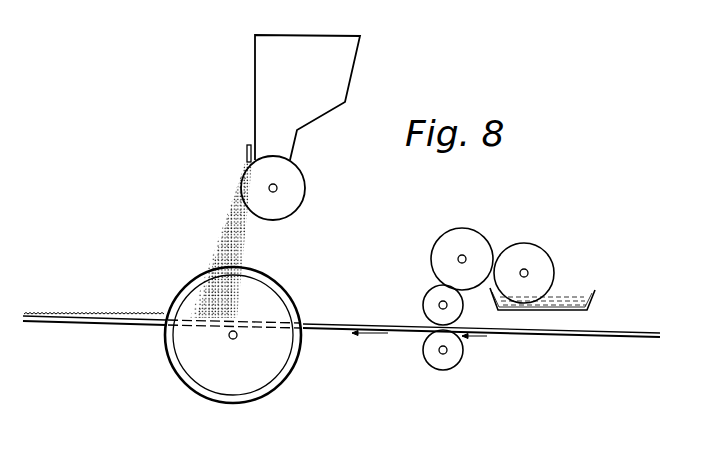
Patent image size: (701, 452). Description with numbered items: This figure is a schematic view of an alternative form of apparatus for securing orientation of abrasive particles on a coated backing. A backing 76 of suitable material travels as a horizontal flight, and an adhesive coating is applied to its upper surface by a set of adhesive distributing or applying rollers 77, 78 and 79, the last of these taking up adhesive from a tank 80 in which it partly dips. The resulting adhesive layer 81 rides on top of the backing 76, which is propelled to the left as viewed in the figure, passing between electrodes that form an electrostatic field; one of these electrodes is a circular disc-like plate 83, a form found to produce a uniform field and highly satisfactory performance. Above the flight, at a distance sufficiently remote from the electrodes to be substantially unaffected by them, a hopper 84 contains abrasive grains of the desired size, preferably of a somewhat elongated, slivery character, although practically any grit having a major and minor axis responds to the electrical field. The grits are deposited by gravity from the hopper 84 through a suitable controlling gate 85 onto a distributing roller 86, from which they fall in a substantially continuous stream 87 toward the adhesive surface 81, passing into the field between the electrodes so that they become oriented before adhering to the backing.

The backing 76 is at (525, 337).
The adhesive distributing roller 77 is at (433, 297).
The adhesive distributing roller 78 is at (462, 228).
The adhesive distributing roller 79 is at (530, 244).
The tank 80 is at (573, 290).
The adhesive layer 81 is at (339, 323).
The circular disc-like plate 83 is at (294, 370).
The hopper 84 is at (260, 72).
The controlling gate 85 is at (247, 150).
The distributing roller 86 is at (298, 186).
The stream 87 is at (236, 248).